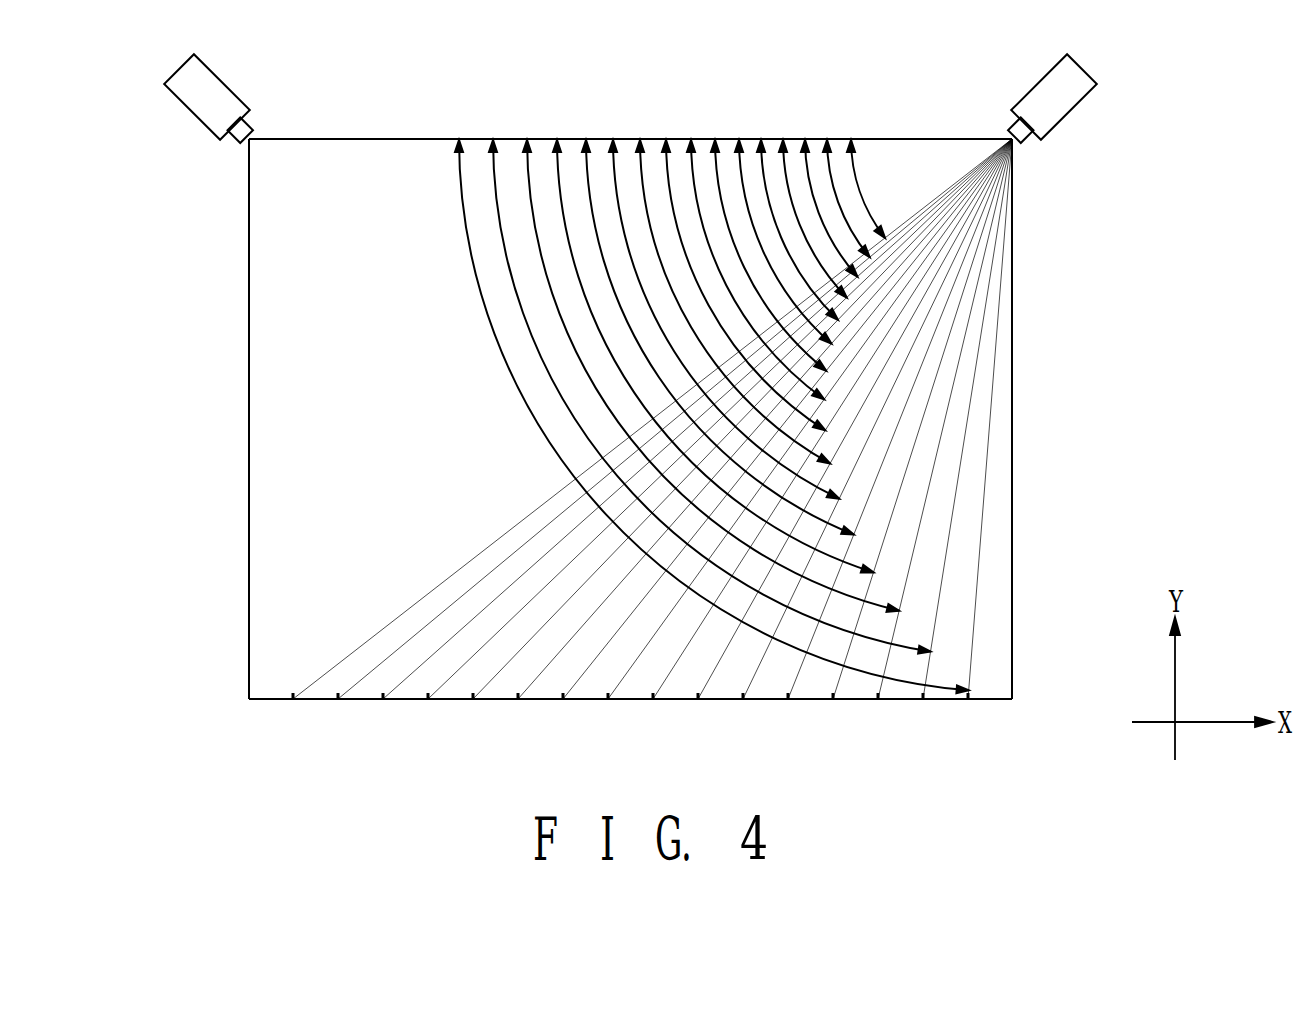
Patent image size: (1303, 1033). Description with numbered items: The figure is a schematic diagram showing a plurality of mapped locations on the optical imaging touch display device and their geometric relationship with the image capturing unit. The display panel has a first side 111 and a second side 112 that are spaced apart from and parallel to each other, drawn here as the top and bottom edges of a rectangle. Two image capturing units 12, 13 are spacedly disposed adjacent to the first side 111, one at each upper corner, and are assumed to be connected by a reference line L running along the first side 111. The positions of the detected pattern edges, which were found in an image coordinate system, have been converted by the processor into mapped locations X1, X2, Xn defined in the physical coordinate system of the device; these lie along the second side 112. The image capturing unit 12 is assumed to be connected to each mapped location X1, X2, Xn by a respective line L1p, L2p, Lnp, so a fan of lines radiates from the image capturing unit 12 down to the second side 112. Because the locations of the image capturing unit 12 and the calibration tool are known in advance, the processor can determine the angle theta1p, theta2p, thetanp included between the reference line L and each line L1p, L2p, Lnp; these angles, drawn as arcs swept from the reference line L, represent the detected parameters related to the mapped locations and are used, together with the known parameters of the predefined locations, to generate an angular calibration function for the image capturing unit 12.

The image capturing unit 12 is at (1070, 113).
The image capturing unit 13 is at (190, 114).
The first side 111 is at (572, 138).
The second side 112 is at (773, 700).
The reference line L is at (365, 139).
The line L1' L1p is at (360, 650).
The line L2' L2p is at (443, 613).
The line Ln' Lnp is at (977, 563).
The angle θ1' theta1p is at (871, 188).
The angle θ2' theta2p is at (836, 82).
The angle θn' thetanp is at (496, 277).
The mapped location X1 is at (294, 724).
The mapped location X2 is at (341, 724).
The mapped location Xn is at (966, 724).